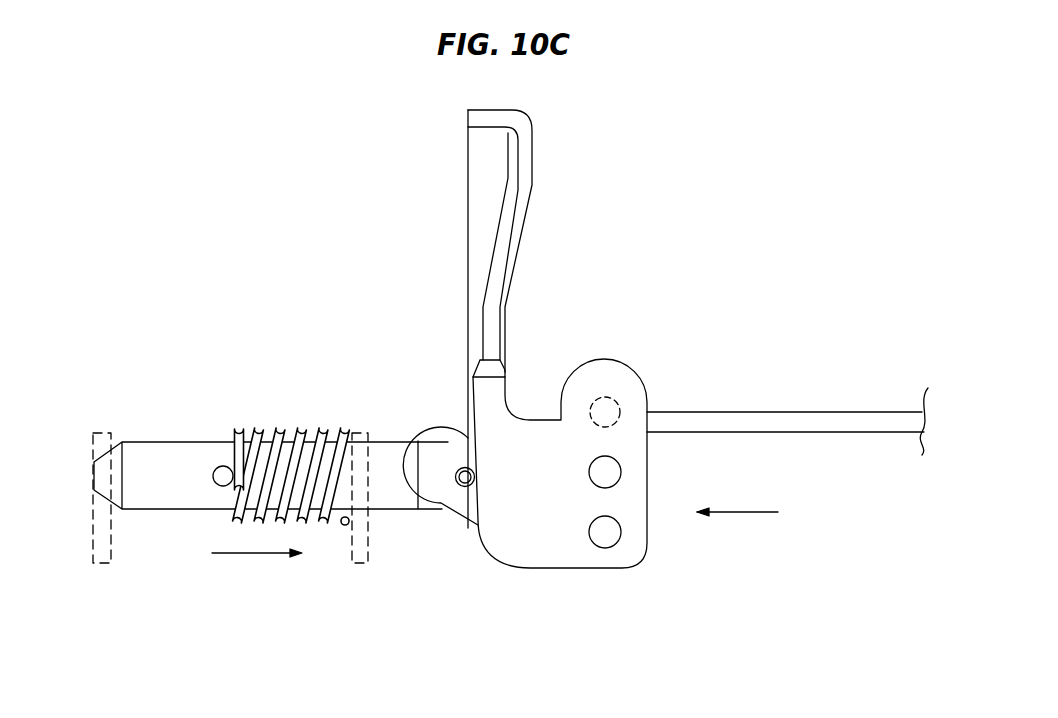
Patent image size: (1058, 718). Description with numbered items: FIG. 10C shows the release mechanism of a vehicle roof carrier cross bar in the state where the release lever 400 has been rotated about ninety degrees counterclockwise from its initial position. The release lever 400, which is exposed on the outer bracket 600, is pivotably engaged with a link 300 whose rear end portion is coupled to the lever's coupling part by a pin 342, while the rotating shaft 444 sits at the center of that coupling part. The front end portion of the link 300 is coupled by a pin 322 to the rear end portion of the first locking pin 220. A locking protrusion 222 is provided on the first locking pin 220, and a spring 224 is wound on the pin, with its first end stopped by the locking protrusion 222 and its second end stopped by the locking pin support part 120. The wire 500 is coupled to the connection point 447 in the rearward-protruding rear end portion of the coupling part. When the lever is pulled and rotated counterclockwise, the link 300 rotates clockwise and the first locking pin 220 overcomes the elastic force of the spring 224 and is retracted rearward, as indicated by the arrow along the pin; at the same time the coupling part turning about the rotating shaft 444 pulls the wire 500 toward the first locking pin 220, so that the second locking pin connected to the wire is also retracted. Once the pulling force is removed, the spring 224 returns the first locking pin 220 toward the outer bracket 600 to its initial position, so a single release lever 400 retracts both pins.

The locking pin support part 120 is at (358, 565).
The first locking pin 220 is at (185, 493).
The locking protrusion 222 is at (225, 466).
The spring 224 is at (300, 432).
The link 300 is at (450, 457).
The pin 322 is at (458, 490).
The pin 342 is at (604, 545).
The release lever 400 is at (578, 264).
The rotating shaft 444 is at (605, 468).
The connection point 447 is at (608, 410).
The wire 500 is at (860, 425).
The outer bracket 600 is at (103, 433).